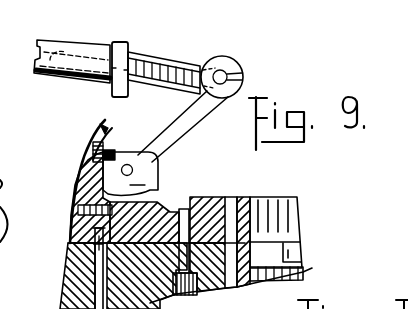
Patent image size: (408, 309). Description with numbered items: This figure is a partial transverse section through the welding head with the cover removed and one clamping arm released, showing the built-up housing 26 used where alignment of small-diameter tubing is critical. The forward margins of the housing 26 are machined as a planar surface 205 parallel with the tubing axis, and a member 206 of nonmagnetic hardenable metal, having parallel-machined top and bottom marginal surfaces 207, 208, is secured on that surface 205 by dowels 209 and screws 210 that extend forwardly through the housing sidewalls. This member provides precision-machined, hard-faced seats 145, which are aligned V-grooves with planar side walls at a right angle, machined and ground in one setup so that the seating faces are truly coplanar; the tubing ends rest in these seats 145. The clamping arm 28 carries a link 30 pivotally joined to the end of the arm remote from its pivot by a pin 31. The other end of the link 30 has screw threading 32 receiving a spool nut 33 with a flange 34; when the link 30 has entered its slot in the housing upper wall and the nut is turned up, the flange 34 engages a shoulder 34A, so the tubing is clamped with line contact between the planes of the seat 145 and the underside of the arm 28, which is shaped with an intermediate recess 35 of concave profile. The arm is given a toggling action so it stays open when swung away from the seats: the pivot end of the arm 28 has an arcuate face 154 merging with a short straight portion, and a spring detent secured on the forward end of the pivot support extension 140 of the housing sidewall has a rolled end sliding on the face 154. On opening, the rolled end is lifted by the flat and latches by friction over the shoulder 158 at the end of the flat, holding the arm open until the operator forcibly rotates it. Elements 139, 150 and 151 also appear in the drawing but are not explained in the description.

The housing 26 is at (68, 281).
The clamping arm 28 is at (172, 123).
The link 30 is at (150, 56).
The pin 31 is at (231, 76).
The screw threading 32 is at (74, 87).
The spool nut 33 is at (72, 41).
The flange 34 is at (121, 42).
The shoulder 34A is at (296, 268).
The intermediate recess 35 is at (186, 139).
The spring 139 is at (100, 127).
The pivot support extension 140 is at (93, 149).
The seat 145 is at (188, 207).
The foot 150 is at (194, 291).
The lever 151 is at (97, 172).
The arcuate face 154 is at (148, 173).
The shoulder 158 is at (126, 151).
The planar surface 205 is at (292, 240).
The member 206 is at (298, 203).
The top marginal surface 207 is at (280, 197).
The bottom marginal surface 208 is at (71, 216).
The dowel 209 is at (230, 202).
The screw 210 is at (231, 286).